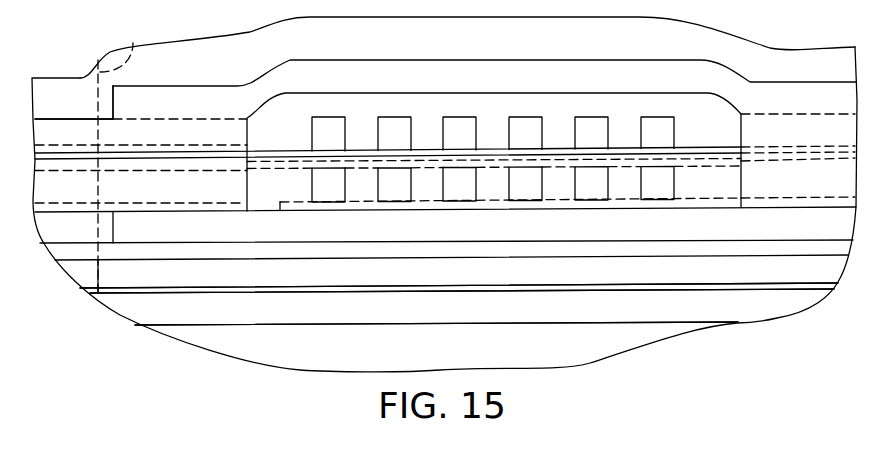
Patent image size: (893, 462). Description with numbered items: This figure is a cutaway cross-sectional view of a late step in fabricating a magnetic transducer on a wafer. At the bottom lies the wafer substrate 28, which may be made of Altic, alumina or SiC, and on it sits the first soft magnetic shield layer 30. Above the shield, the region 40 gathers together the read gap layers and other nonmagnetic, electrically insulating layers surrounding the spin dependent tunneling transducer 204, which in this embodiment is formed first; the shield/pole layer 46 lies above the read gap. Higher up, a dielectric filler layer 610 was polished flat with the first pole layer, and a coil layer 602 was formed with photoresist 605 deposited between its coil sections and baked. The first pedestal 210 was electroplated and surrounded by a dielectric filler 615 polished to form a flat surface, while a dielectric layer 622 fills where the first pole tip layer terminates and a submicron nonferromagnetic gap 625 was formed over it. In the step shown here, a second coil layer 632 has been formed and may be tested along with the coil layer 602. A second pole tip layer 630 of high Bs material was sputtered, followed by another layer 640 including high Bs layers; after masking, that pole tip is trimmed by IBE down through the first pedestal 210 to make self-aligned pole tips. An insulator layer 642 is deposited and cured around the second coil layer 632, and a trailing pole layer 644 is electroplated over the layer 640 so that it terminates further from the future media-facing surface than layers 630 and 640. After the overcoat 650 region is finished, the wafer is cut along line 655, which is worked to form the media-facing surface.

The top encapsulation layer 650 is at (462, 49).
The trailing pole layer 644 is at (511, 85).
The insulator layer 642 is at (625, 100).
The second pole tip layer 640 is at (215, 128).
The second pole tip layer 630 is at (149, 138).
The line 655 is at (125, 45).
The second coil layer 632 is at (693, 132).
The shield/pole layer 46 is at (588, 237).
The nonferromagnetic gap 625 is at (224, 162).
The photoresist 605 is at (427, 183).
The dielectric layer 622 is at (358, 168).
The coil layer 602 is at (691, 181).
The dielectric filler 615 is at (262, 192).
The first pedestal 210 is at (145, 194).
The dielectric filler layer 610 is at (85, 237).
The first soft magnetic shield layer 30 is at (509, 318).
The region 40 is at (623, 252).
The wafer substrate 28 is at (459, 356).
The spin dependent tunneling transducer 204 is at (103, 293).